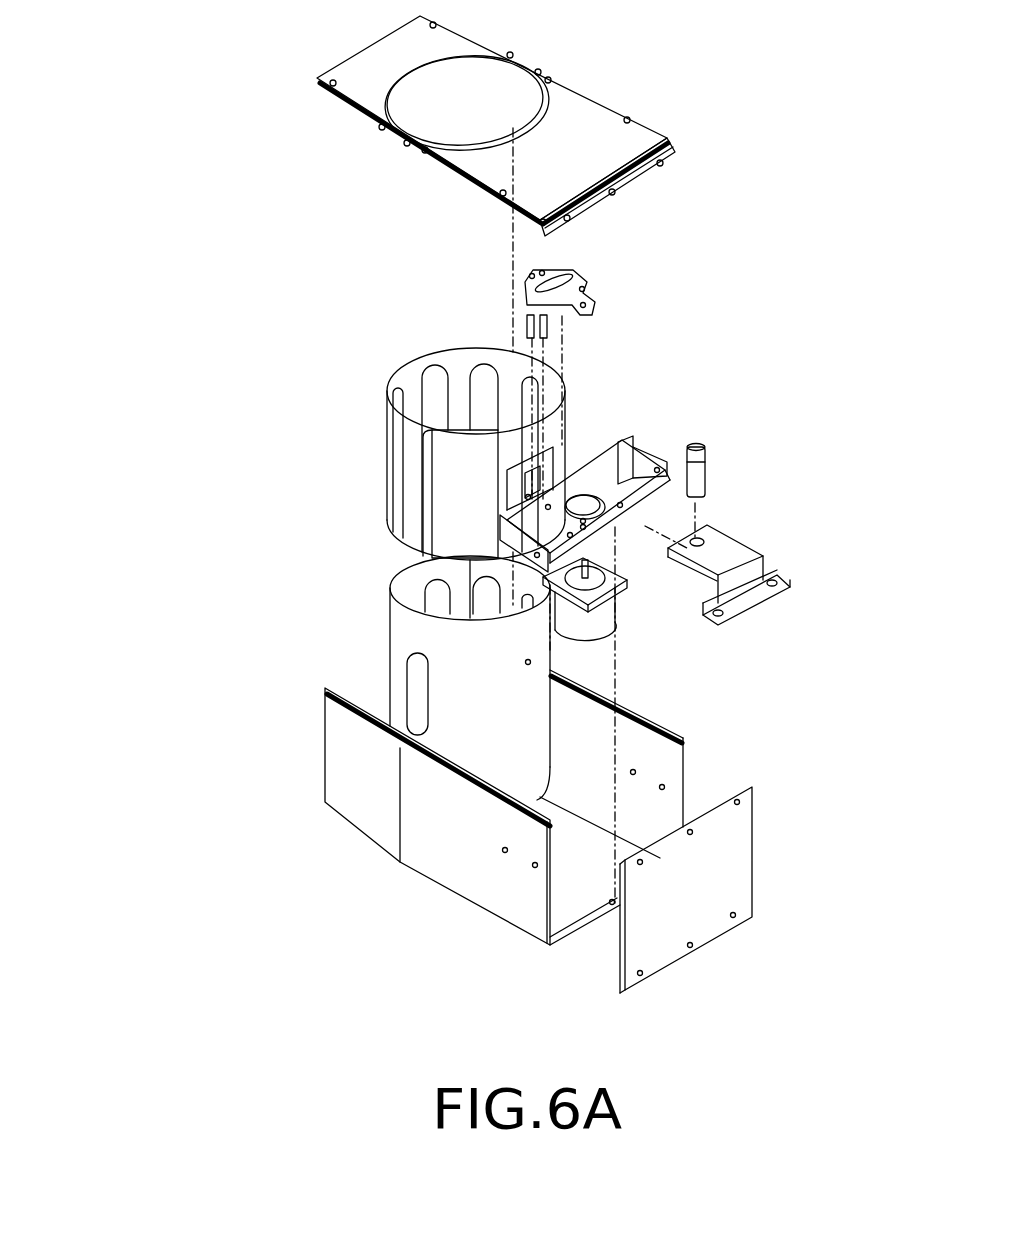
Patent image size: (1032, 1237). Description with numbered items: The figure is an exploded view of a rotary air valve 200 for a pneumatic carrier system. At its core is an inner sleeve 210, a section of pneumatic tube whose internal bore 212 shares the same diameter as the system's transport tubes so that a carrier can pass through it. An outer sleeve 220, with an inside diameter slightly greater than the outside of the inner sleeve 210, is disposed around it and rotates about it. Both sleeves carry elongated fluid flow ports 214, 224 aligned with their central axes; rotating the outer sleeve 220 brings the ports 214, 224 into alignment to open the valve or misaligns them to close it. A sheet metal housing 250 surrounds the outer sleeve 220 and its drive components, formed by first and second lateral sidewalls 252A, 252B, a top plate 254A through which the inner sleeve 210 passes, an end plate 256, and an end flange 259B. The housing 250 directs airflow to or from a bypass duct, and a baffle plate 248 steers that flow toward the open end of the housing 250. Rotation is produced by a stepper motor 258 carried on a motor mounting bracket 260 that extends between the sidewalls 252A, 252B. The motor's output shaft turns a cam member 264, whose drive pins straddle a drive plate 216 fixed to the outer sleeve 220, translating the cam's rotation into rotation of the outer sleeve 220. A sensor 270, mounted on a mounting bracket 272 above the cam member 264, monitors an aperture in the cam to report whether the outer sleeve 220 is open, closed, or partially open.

The valve 200 is at (196, 605).
The inner sleeve 210 is at (403, 620).
The internal bore 212 is at (438, 590).
The fluid flow ports 214 is at (417, 684).
The drive plate 216 is at (560, 452).
The outer sleeve 220 is at (412, 370).
The fluid flow ports 224 is at (483, 378).
The baffle plate 248 is at (440, 472).
The housing 250 is at (474, 824).
The first lateral sidewall 252A is at (530, 897).
The second lateral sidewall 252B is at (615, 760).
The top plate 254A is at (616, 163).
The end plate 256 is at (722, 902).
The stepper motor 258 is at (607, 627).
The end flange 259B is at (618, 884).
The motor mounting bracket 260 is at (627, 460).
The cam member 264 is at (586, 286).
The sensor 270 is at (707, 474).
The mounting bracket 272 is at (745, 549).